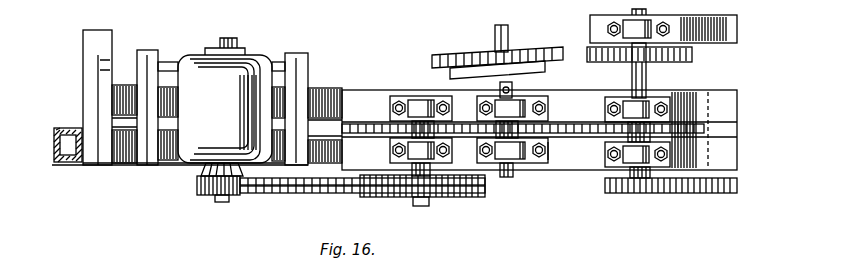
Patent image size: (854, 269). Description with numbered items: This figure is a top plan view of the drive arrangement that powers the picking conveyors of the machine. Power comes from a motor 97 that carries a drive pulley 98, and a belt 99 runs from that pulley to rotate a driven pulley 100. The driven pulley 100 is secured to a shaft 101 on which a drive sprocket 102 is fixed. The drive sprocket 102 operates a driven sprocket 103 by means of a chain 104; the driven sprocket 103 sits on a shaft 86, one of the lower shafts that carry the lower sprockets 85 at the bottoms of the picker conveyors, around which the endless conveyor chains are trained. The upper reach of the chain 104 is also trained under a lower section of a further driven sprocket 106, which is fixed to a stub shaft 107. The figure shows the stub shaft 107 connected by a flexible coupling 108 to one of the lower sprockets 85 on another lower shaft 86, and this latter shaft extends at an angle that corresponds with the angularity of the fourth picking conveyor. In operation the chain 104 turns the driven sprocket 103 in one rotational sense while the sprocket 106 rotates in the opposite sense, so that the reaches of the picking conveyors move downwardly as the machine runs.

The lower sprocket 85 is at (436, 62).
The shaft 86 is at (507, 31).
The motor 97 is at (213, 194).
The drive pulley 98 is at (233, 195).
The belt 99 is at (353, 192).
The driven pulley 100 is at (400, 197).
The shaft 101 is at (410, 170).
The drive sprocket 102 is at (390, 125).
The driven sprocket 103 is at (737, 132).
The chain 104 is at (600, 135).
The driven sprocket 106 is at (560, 134).
The stub shaft 107 is at (504, 173).
The flexible coupling 108 is at (543, 67).